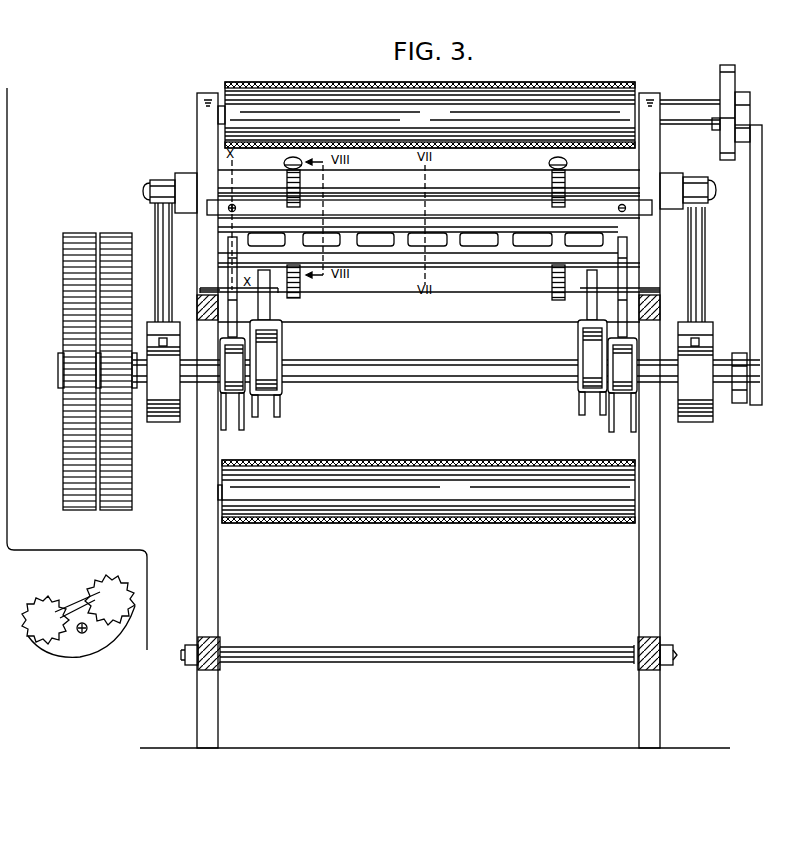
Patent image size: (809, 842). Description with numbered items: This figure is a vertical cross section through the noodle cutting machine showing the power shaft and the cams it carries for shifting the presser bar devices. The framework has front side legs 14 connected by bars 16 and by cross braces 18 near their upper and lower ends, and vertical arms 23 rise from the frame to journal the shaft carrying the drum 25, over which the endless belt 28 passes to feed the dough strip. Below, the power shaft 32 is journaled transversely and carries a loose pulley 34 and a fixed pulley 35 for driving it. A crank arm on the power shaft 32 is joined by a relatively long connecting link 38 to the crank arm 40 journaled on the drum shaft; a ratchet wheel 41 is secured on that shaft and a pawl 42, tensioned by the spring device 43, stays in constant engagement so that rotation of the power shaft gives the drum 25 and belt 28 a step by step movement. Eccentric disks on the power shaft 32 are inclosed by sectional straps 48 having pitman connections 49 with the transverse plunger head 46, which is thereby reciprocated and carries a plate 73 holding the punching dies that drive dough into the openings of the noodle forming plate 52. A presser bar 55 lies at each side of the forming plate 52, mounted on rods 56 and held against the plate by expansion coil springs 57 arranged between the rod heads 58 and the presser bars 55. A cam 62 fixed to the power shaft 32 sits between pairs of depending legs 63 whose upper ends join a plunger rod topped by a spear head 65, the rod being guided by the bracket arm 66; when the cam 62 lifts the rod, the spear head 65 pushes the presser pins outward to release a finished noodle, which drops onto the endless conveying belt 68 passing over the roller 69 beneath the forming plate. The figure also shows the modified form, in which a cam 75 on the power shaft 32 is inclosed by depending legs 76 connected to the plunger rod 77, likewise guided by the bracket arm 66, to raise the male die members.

The front side leg 14 is at (197, 530).
The connecting bar 16 is at (200, 670).
The cross brace 18 is at (418, 662).
The vertical arm 23 is at (204, 96).
The drum 25 is at (552, 75).
The endless belt 28 is at (426, 102).
The power shaft 32 is at (437, 372).
The loose pulley 34 is at (73, 233).
The fixed pulley 35 is at (110, 233).
The connecting link 38 is at (763, 272).
The crank arm 40 is at (743, 120).
The ratchet wheel 41 is at (727, 66).
The pawl 42 is at (718, 103).
The spring device 43 is at (712, 127).
The plunger head 46 is at (429, 209).
The sectional strap 48 is at (170, 405).
The pitman connection 49 is at (160, 250).
The noodle forming plate 52 is at (418, 242).
The presser bar 55 is at (462, 258).
The rod 56 is at (740, 398).
The expansion coil spring 57 is at (285, 180).
The rod head 58 is at (285, 163).
The cam 62 is at (234, 405).
The depending leg 63 is at (244, 425).
The spear head 65 is at (228, 243).
The bracket arm 66 is at (612, 288).
The endless conveying belt 68 is at (426, 510).
The roller 69 is at (422, 540).
The plate 73 is at (448, 194).
The cam 75 is at (266, 368).
The depending leg 76 is at (428, 369).
The plunger rod 77 is at (270, 316).